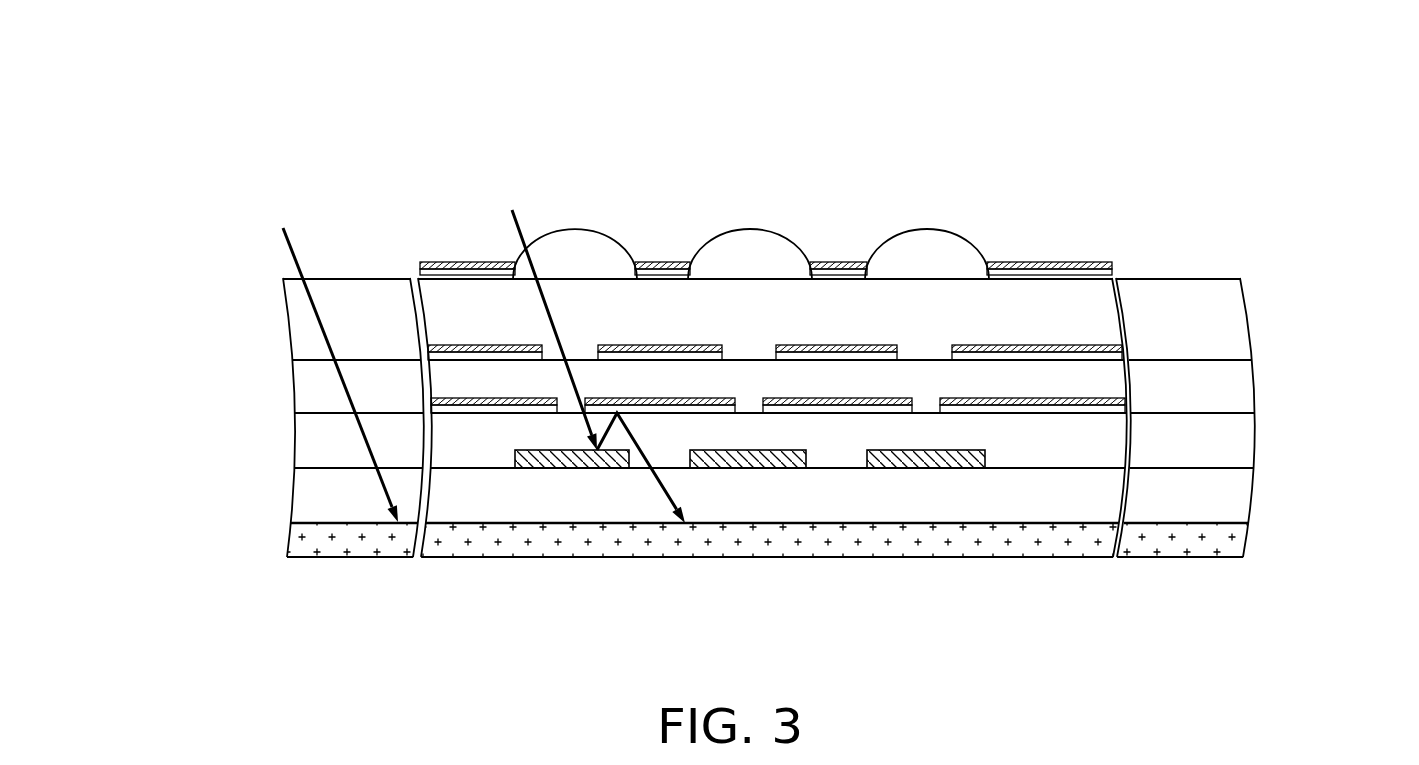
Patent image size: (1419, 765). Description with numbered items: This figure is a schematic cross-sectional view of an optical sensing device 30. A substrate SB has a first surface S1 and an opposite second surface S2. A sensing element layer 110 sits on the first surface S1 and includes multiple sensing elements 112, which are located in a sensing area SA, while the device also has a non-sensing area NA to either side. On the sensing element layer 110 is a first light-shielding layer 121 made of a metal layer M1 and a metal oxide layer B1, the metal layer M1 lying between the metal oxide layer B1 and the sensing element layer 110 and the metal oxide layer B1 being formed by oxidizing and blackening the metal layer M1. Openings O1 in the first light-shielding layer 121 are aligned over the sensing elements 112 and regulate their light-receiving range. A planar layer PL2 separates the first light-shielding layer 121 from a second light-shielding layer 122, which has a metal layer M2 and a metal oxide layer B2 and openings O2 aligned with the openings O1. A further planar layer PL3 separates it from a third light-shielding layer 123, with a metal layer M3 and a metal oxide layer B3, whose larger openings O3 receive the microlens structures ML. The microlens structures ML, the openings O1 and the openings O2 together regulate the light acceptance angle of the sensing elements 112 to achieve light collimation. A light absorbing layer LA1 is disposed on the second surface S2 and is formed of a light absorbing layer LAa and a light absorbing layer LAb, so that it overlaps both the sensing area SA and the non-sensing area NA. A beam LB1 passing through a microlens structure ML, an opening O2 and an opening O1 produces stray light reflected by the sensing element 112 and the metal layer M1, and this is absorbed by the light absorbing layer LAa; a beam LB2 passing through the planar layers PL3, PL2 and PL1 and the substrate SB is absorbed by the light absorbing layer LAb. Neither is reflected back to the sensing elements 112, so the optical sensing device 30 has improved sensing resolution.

The optical sensing device 30 is at (1387, 615).
The sensing element layer 110 is at (209, 432).
The planar layer PL1 is at (308, 428).
The sensing element 112 is at (515, 462).
The substrate SB is at (307, 503).
The first light-shielding layer 121 is at (209, 355).
The metal oxide layer B1 is at (487, 397).
The metal layer M1 is at (435, 408).
The second light-shielding layer 122 is at (209, 257).
The metal oxide layer B2 is at (500, 345).
The metal layer M2 is at (435, 357).
The third light-shielding layer 123 is at (209, 135).
The metal oxide layer B3 is at (418, 266).
The metal layer M3 is at (418, 273).
The planar layer PL2 is at (303, 372).
The planar layer PL3 is at (293, 284).
The microlens structure ML is at (581, 232).
The beam LB1 is at (511, 214).
The beam LB2 is at (281, 229).
The opening O1 is at (924, 405).
The opening O2 is at (941, 360).
The opening O3 is at (971, 275).
The first surface S1 is at (1209, 465).
The second surface S2 is at (1209, 527).
The non-sensing area NA is at (413, 127).
The sensing area SA is at (1110, 127).
The light absorbing layer LA1 is at (172, 3).
The light absorbing layer LAa is at (836, 578).
The light absorbing layer LAb is at (1155, 578).